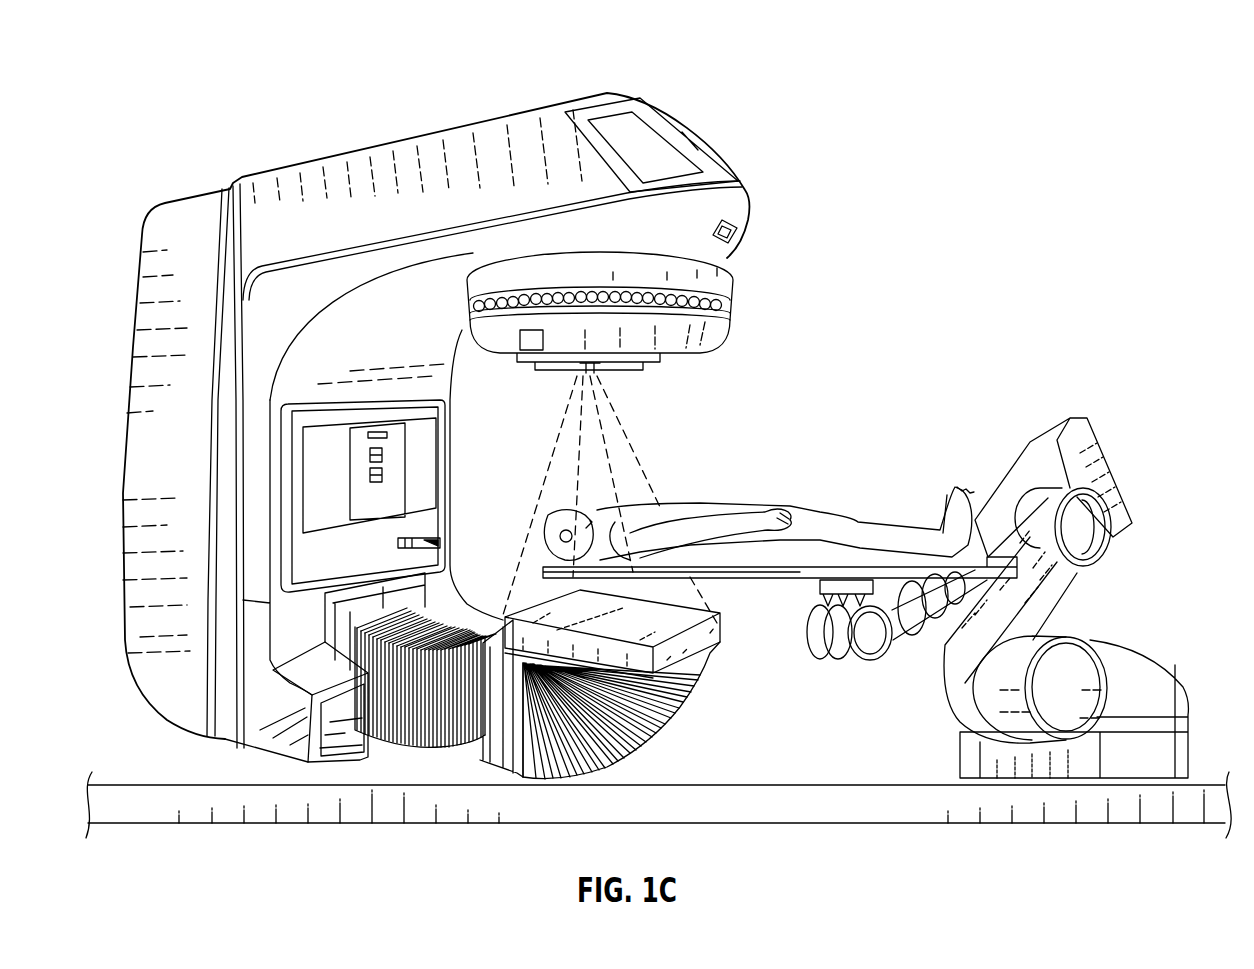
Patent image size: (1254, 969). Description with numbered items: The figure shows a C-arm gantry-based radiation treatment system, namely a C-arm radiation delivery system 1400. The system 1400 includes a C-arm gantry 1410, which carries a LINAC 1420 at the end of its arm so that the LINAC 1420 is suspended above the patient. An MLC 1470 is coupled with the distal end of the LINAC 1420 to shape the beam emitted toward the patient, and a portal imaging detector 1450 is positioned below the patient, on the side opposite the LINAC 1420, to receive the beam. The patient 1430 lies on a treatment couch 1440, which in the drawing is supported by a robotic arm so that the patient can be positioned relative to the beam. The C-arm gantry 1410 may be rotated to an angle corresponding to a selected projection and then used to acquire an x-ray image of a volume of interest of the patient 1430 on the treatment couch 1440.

The C-arm radiation delivery system 1400 is at (177, 81).
The C-arm gantry 1410 is at (410, 136).
The LINAC 1420 is at (728, 310).
The patient 1430 is at (557, 508).
The treatment couch 1440 is at (550, 563).
The portal imaging detector 1450 is at (720, 617).
The MLC 1470 is at (603, 373).